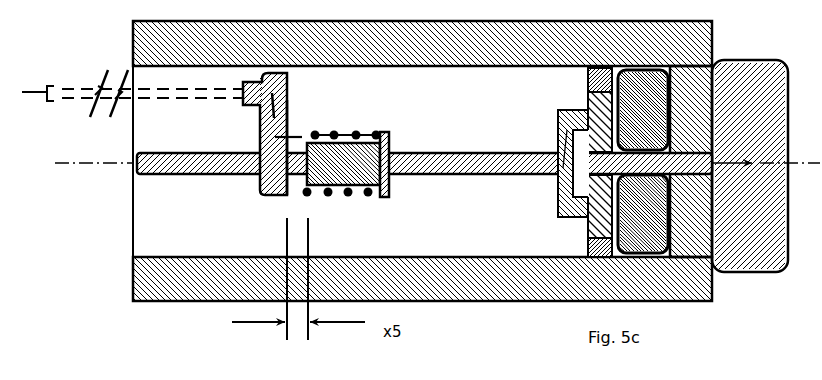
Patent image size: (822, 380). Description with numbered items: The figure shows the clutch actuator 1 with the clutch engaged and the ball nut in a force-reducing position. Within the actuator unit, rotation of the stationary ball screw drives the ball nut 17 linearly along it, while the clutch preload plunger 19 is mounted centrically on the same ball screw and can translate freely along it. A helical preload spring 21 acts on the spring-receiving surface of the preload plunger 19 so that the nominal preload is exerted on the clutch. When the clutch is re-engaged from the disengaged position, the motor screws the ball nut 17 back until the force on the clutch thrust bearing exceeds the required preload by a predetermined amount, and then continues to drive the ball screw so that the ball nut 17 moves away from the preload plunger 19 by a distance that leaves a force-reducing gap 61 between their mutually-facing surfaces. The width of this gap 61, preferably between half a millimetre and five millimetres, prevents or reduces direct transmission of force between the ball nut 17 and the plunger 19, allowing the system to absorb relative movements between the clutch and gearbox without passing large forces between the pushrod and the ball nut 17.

The clutch actuator 1 is at (497, 314).
The clutch preload plunger 19 is at (253, 191).
The force-reducing gap 61 is at (289, 192).
The ball nut 17 is at (346, 178).
The helical preload spring 21 is at (371, 196).